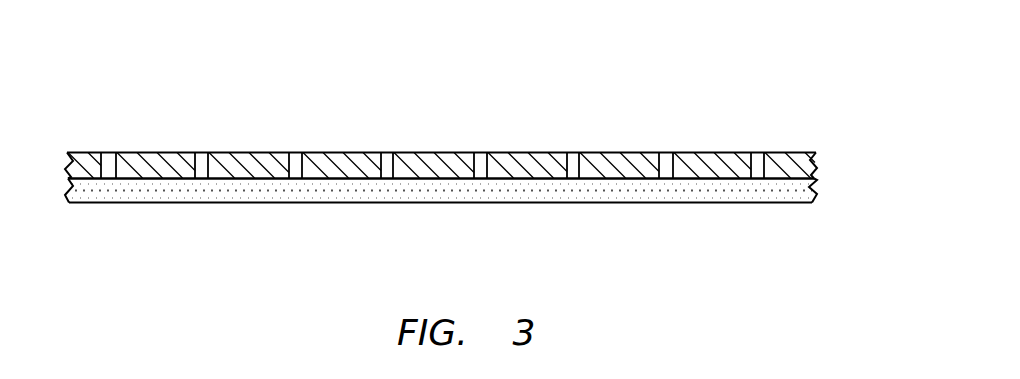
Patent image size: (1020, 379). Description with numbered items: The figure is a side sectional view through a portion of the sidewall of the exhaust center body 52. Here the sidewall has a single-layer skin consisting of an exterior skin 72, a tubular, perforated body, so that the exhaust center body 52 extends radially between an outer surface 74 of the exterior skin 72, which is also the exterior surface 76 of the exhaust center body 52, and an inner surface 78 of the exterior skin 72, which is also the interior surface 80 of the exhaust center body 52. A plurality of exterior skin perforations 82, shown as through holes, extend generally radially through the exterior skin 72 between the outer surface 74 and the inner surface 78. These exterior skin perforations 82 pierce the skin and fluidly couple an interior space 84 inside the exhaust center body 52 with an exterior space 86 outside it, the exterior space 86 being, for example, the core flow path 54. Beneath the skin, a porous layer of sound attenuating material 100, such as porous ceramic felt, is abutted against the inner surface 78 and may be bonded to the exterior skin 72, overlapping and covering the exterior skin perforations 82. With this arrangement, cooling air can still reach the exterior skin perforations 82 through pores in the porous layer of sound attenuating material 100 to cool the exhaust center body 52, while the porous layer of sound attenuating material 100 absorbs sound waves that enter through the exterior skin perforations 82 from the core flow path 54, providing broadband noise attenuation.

The exhaust center body 52 is at (465, 153).
The core flow path 54 is at (441, 96).
The exterior space 86 is at (577, 70).
The exterior skin 72 is at (822, 159).
The outer surface 74 is at (428, 124).
The exterior surface 76 is at (87, 152).
The inner surface 78 is at (87, 180).
The interior surface 80 is at (128, 203).
The exterior skin perforations 82 is at (113, 153).
The interior space 84 is at (475, 263).
The porous layer of sound attenuating material 100 is at (824, 196).